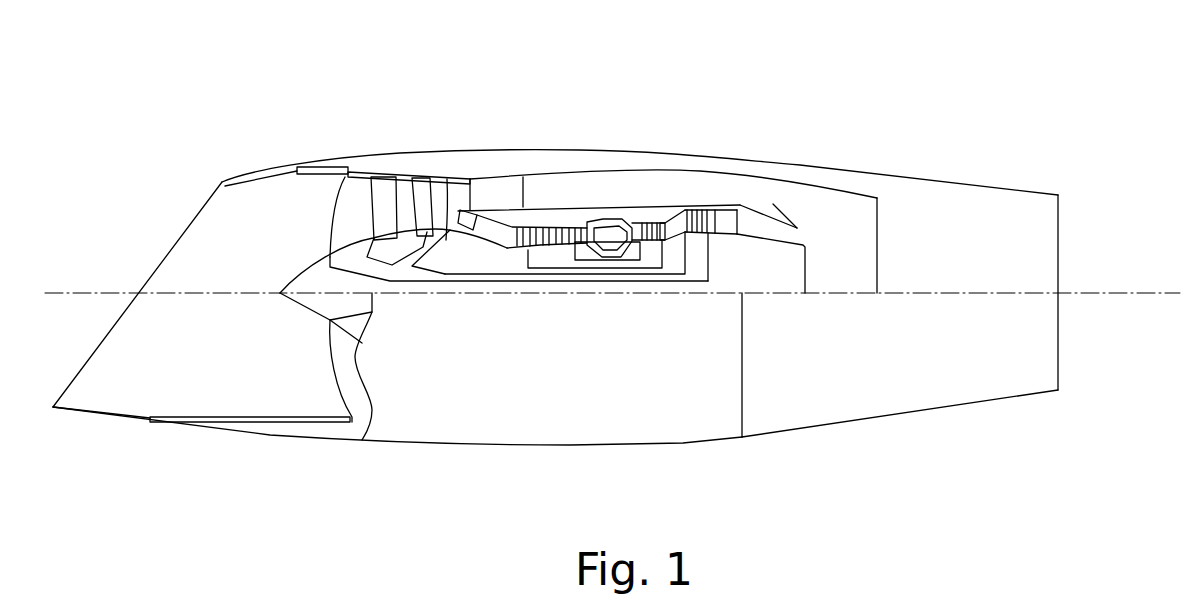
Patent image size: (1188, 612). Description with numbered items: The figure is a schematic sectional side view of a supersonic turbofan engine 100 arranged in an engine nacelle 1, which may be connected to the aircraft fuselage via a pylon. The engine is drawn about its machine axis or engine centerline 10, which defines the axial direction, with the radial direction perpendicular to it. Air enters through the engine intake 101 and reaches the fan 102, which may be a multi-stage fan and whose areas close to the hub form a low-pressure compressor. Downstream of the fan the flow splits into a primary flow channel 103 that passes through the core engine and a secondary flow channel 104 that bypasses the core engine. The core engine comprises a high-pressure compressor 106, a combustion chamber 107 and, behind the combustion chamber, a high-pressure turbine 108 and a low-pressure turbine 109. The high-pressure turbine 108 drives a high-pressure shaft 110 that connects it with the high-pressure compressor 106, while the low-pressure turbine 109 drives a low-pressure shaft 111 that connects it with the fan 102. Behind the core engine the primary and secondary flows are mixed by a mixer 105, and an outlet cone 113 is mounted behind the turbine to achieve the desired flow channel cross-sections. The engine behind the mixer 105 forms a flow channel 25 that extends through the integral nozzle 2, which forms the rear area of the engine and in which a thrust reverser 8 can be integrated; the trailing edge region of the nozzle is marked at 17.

The turbofan engine 100 is at (473, 128).
The engine nacelle 1 is at (483, 444).
The nozzle 2 is at (982, 176).
The thrust reverser 8 is at (818, 440).
The engine centerline 10 is at (167, 293).
The trailing edge 17 is at (1060, 218).
The flow channel 25 is at (858, 212).
The engine intake 101 is at (258, 183).
The fan 102 is at (385, 171).
The primary flow channel 103 is at (523, 282).
The secondary flow channel 104 is at (553, 176).
The mixer 105 is at (797, 228).
The high-pressure compressor 106 is at (565, 282).
The combustion chamber 107 is at (612, 212).
The high-pressure turbine 108 is at (672, 248).
The low-pressure turbine 109 is at (698, 242).
The high-pressure shaft 110 is at (615, 282).
The low-pressure shaft 111 is at (462, 281).
The outlet cone 113 is at (803, 245).